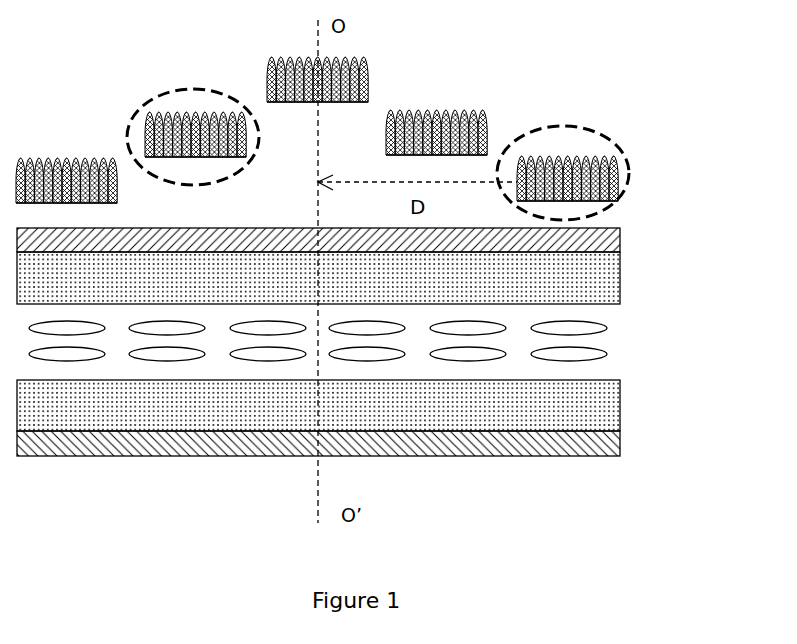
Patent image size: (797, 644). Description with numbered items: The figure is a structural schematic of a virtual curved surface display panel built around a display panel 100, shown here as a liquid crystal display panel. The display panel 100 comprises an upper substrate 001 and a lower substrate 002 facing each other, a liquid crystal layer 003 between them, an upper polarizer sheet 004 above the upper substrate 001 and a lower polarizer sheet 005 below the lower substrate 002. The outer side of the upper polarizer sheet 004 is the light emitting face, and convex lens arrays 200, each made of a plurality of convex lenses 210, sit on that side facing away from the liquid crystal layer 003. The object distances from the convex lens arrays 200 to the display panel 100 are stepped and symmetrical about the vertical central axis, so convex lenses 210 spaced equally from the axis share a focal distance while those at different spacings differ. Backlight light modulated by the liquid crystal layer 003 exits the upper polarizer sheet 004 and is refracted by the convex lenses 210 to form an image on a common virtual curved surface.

The display panel 100 is at (400, 341).
The upper substrate 001 is at (620, 277).
The lower substrate 002 is at (620, 403).
The liquid crystal layer 003 is at (620, 337).
The upper polarizer sheet 004 is at (620, 242).
The lower polarizer sheet 005 is at (363, 443).
The convex lens array 200 is at (259, 152).
The convex lens 210 is at (367, 80).